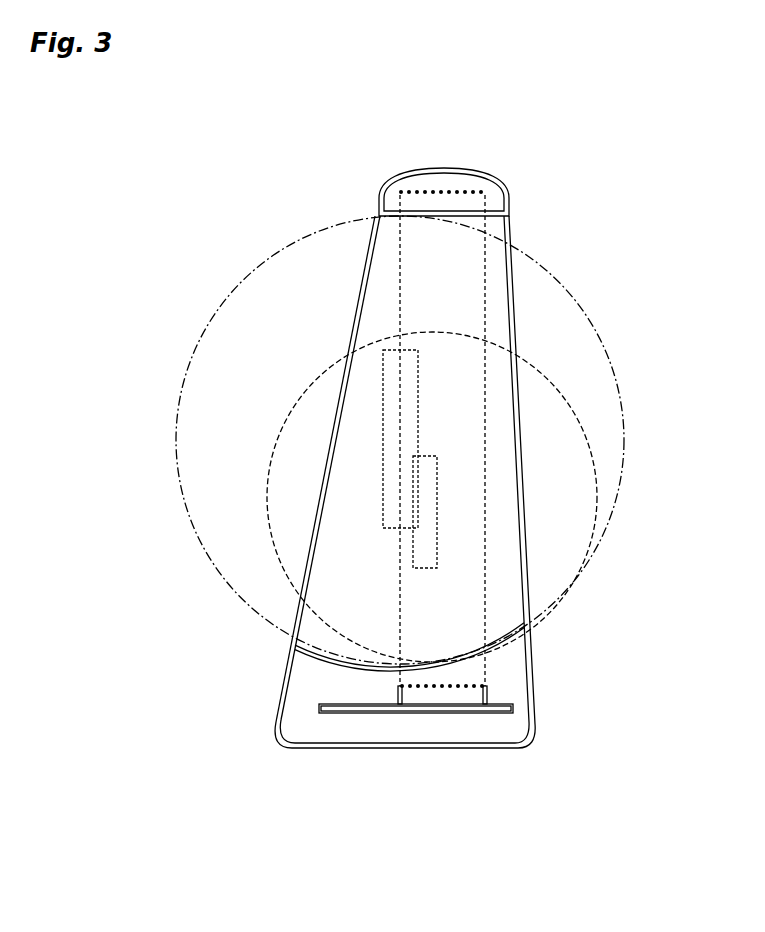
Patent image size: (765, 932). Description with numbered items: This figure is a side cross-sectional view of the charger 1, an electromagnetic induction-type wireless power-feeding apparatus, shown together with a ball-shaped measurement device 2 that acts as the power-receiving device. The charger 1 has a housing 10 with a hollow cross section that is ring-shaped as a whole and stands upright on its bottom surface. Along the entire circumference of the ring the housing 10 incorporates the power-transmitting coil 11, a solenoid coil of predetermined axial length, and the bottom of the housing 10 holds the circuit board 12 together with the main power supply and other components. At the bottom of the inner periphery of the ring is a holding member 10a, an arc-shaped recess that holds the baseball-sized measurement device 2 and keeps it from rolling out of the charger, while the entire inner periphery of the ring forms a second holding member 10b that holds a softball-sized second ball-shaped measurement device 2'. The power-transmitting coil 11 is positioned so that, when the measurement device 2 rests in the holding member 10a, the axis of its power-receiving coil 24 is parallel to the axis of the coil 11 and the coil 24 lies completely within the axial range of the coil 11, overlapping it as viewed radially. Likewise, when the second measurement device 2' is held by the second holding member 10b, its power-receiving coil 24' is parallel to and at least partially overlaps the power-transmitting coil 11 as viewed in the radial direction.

The charger 1 is at (345, 170).
The ball-shaped measurement device 2 is at (490, 497).
The second ball-shaped measurement device 2' is at (444, 440).
The housing 10 is at (502, 186).
The holding member 10a is at (432, 658).
The second holding member 10b is at (405, 216).
The power-transmitting coil 11 is at (388, 281).
The circuit board 12 is at (378, 714).
The power-receiving coil 24 is at (438, 538).
The power-receiving coil 24' is at (374, 449).